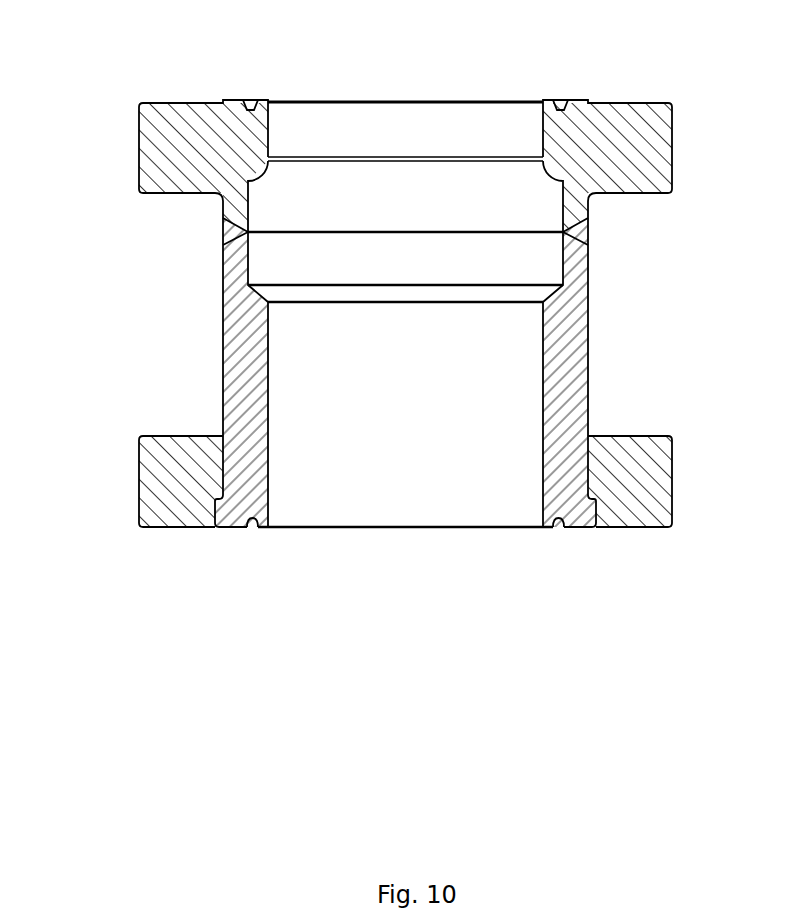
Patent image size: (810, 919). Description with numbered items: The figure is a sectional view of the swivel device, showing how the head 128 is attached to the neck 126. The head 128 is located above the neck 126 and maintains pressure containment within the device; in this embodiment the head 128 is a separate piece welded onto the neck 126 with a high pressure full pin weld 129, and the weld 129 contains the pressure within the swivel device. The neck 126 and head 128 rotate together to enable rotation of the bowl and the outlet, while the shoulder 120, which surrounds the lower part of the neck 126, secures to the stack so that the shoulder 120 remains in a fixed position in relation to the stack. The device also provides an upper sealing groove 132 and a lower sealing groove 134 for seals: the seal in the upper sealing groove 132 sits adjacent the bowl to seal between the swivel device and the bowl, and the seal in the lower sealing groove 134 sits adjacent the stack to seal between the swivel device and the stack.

The shoulder 120 is at (673, 472).
The neck 126 is at (588, 380).
The head 128 is at (132, 184).
The high pressure full pin weld 129 is at (588, 232).
The upper sealing groove 132 is at (253, 107).
The lower sealing groove 134 is at (253, 528).